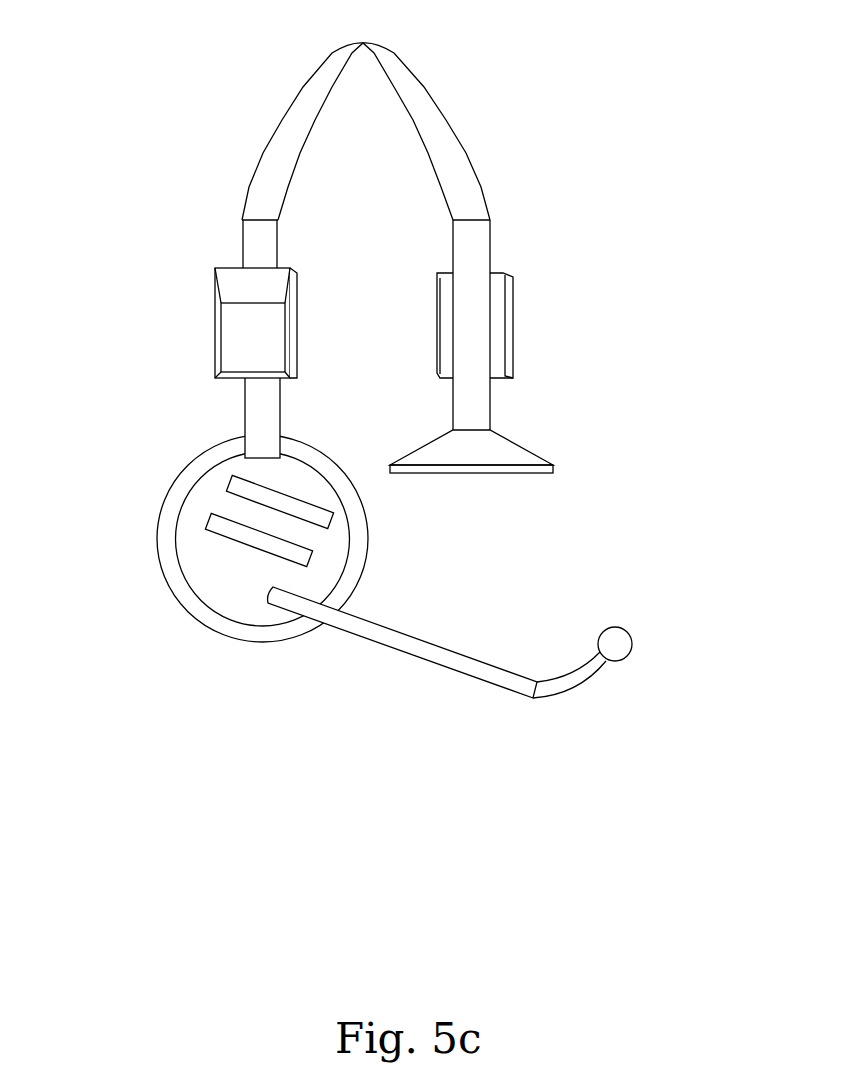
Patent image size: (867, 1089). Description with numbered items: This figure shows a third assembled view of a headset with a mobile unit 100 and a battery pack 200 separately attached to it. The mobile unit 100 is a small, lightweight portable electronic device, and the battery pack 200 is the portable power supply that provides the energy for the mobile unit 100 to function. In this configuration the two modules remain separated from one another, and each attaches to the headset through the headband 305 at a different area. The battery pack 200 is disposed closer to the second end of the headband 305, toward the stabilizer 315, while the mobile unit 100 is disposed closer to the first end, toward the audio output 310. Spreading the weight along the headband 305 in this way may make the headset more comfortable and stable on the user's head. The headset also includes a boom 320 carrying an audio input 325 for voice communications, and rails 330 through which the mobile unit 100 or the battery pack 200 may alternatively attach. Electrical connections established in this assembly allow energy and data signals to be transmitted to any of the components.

The headband 305 is at (452, 125).
The mobile unit 100 is at (252, 340).
The battery pack 200 is at (495, 325).
The rails 330 is at (222, 522).
The audio output 310 is at (218, 585).
The stabilizer 315 is at (473, 450).
The boom 320 is at (405, 642).
The audio input 325 is at (617, 644).